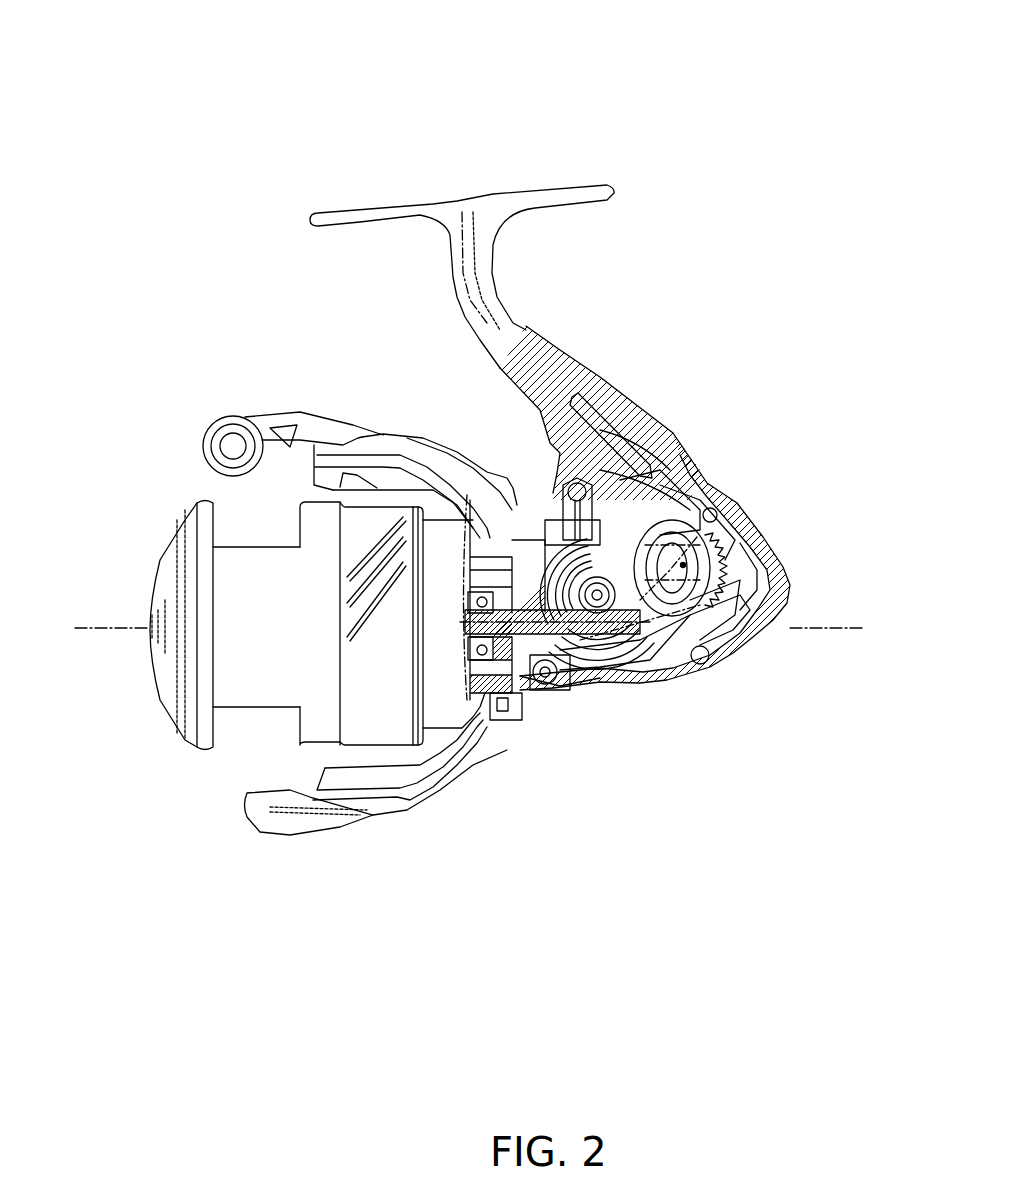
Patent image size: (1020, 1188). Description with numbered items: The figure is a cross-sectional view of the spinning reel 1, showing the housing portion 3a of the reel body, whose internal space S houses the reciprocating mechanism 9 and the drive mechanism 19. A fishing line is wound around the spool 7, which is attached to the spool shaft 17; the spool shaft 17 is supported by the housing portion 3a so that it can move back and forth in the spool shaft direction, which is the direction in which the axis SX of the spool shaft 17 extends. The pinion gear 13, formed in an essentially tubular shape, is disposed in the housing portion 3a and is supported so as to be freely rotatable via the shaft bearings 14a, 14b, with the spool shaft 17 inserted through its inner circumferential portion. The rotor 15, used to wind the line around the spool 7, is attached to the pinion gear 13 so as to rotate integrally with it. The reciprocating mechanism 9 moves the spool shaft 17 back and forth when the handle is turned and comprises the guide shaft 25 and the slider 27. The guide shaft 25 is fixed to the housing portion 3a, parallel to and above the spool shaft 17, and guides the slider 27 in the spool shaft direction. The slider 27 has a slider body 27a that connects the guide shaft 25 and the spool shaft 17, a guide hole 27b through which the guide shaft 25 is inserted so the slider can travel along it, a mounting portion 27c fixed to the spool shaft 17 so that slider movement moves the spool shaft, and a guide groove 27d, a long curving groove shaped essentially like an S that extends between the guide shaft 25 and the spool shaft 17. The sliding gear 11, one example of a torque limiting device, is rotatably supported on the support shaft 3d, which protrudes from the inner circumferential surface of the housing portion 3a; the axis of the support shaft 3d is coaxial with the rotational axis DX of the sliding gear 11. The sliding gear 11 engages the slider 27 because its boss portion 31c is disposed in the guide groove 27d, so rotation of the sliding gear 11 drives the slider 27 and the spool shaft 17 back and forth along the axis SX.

The spinning reel 1 is at (651, 100).
The housing portion 3a is at (563, 352).
The support shaft 3d is at (700, 500).
The spool 7 is at (243, 707).
The reciprocating mechanism 9 is at (703, 660).
The sliding gear 11 is at (717, 507).
The pinion gear 13 is at (530, 703).
The shaft bearing 14a is at (480, 662).
The shaft bearing 14b is at (578, 693).
The rotor 15 is at (418, 815).
The spool shaft 17 is at (517, 727).
The drive mechanism 19 is at (597, 690).
The guide shaft 25 is at (627, 507).
The slider 27 is at (745, 645).
The slider body 27a is at (723, 667).
The guide hole 27b is at (640, 500).
The mounting portion 27c is at (672, 670).
The guide groove 27d is at (747, 540).
The boss portion 31c is at (673, 500).
The internal space S is at (540, 485).
The axis of the spool shaft SX is at (468, 643).
The rotational axis DX is at (697, 537).